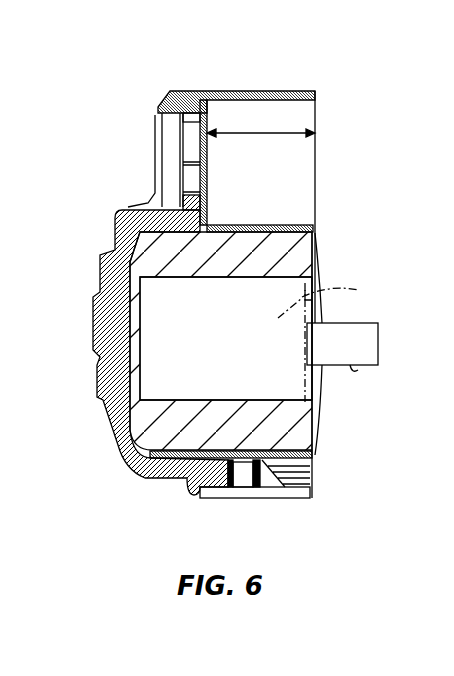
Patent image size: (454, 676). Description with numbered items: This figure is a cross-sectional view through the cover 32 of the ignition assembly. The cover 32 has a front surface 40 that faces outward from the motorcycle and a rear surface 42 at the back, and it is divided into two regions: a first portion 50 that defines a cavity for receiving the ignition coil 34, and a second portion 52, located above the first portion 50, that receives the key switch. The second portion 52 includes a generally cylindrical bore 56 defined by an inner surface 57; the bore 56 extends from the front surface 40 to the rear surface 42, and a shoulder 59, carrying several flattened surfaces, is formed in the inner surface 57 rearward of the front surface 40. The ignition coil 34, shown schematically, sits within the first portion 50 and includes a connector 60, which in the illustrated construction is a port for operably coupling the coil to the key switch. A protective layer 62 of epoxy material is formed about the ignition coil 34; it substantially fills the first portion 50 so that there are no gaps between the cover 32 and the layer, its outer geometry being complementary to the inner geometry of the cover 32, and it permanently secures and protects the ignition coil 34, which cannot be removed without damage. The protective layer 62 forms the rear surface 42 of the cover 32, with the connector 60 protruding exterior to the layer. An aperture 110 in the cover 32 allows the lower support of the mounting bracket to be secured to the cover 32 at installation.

The cover 32 is at (92, 426).
The ignition coil 34 is at (333, 342).
The front surface 40 is at (92, 332).
The rear surface 42 is at (320, 268).
The first portion 50 is at (338, 413).
The second portion 52 is at (335, 147).
The bore 56 is at (287, 178).
The inner surface 57 is at (290, 105).
The shoulder 59 is at (191, 116).
The connector 60 is at (378, 342).
The protective layer 62 is at (278, 420).
The aperture 110 is at (245, 478).